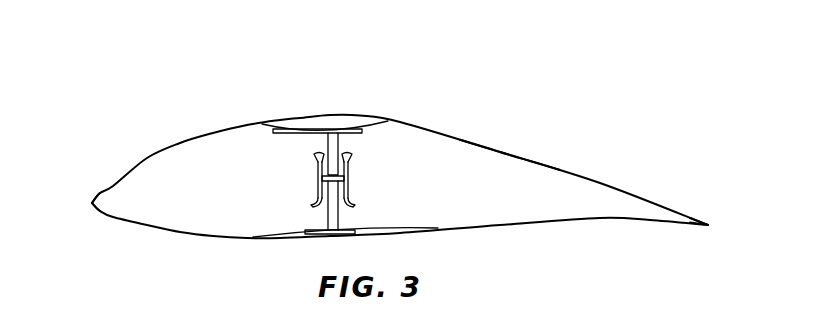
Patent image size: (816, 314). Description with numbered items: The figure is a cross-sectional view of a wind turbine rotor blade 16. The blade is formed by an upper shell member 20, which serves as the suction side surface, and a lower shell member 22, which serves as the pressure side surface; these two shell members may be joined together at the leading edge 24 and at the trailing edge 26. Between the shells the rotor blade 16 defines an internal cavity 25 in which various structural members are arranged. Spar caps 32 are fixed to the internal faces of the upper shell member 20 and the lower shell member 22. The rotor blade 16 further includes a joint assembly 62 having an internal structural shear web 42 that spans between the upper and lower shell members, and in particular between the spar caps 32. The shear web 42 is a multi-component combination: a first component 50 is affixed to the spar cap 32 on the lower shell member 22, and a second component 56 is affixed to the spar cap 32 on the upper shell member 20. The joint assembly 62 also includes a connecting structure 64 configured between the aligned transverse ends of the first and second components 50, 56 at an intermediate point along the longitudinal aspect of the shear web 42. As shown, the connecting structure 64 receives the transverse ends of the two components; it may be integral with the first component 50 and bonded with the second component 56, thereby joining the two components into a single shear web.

The rotor blade 16 is at (374, 168).
The upper shell member 20 is at (240, 128).
The lower shell member 22 is at (238, 238).
The leading edge 24 is at (88, 205).
The internal cavity 25 is at (498, 167).
The trailing edge 26 is at (700, 235).
The spar cap 32 is at (363, 122).
The shear web 42 is at (291, 206).
The first component 50 is at (339, 209).
The second component 56 is at (339, 146).
The joint assembly 62 is at (321, 181).
The connecting structure 64 is at (350, 178).